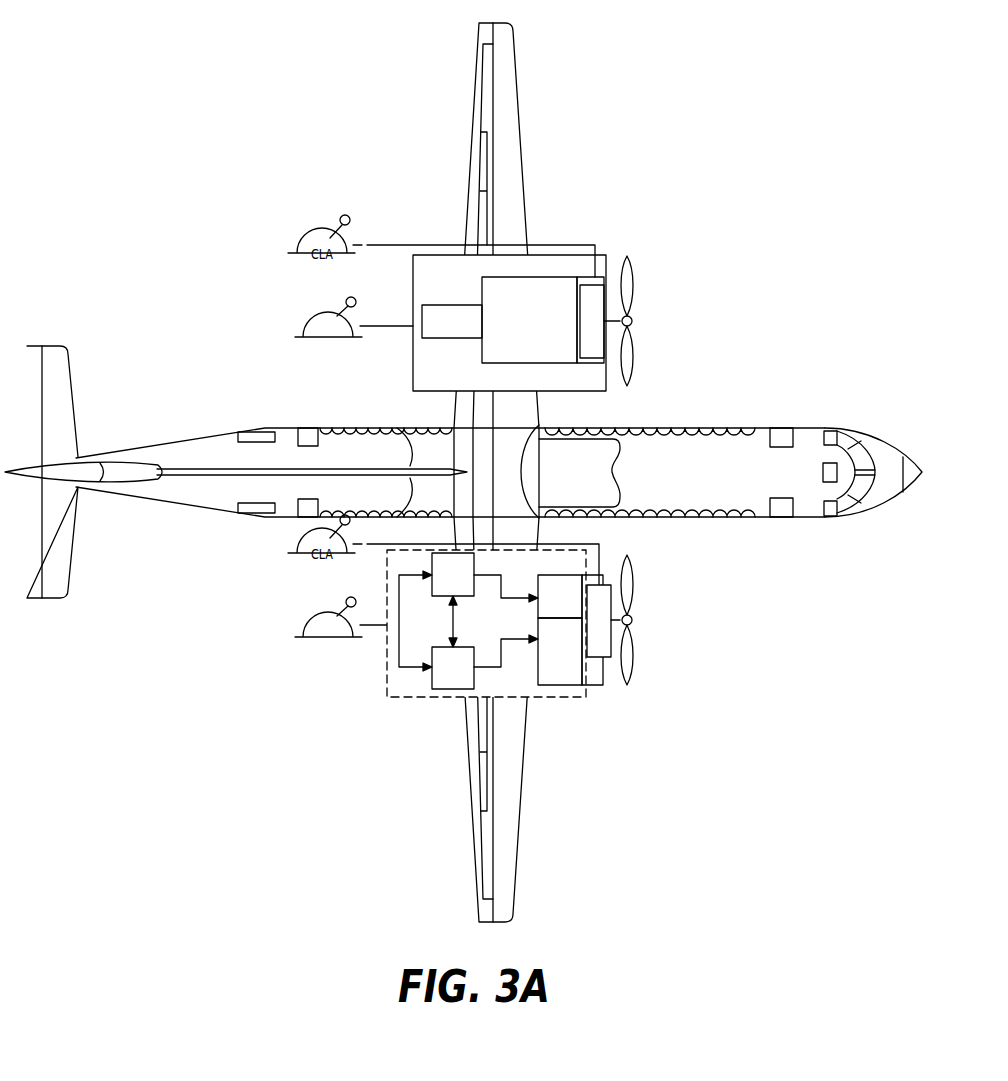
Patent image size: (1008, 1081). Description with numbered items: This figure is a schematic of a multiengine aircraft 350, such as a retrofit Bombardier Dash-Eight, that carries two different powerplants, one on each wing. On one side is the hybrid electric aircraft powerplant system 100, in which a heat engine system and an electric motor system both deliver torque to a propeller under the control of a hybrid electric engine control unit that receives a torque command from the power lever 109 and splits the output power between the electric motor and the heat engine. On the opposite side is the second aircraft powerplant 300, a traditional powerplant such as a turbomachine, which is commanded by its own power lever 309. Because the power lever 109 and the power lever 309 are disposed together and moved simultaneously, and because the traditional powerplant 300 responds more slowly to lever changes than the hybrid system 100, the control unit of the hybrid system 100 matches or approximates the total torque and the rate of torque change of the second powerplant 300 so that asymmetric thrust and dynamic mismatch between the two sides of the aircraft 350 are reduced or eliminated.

The second aircraft powerplant 300 is at (597, 250).
The power lever (PLA) 309 is at (310, 328).
The multiengine aircraft 350 is at (693, 486).
The power lever (PLA) 109 is at (310, 628).
The hybrid electric aircraft powerplant system 100 is at (570, 686).